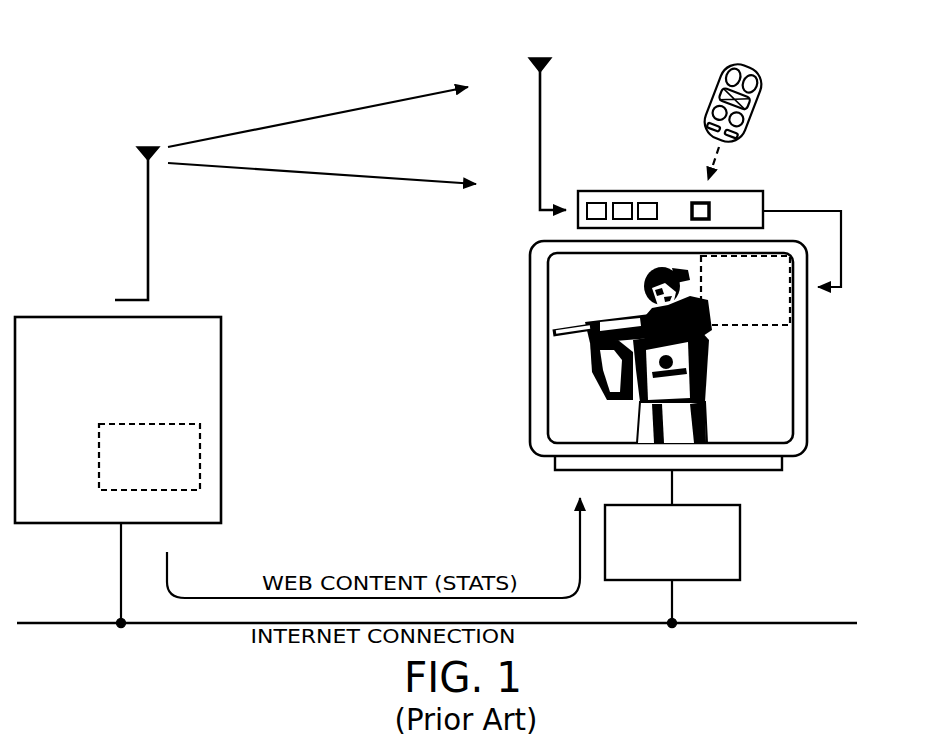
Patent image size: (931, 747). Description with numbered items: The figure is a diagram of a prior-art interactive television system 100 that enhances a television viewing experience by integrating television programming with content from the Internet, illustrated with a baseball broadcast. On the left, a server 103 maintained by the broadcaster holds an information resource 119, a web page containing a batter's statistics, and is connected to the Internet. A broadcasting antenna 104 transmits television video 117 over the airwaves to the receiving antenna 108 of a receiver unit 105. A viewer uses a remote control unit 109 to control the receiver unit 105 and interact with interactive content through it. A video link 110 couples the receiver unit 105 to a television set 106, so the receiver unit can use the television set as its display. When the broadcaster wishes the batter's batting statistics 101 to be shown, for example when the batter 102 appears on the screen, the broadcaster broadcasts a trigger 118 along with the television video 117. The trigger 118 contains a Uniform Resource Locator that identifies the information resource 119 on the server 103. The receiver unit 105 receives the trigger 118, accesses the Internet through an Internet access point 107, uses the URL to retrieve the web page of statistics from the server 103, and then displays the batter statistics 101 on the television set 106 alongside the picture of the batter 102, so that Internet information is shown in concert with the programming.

The interactive television system 100 is at (792, 52).
The batter's batting statistics 101 is at (770, 343).
The batter 102 is at (560, 367).
The server 103 is at (100, 406).
The broadcasting antenna 104 is at (144, 190).
The receiver unit 105 is at (756, 221).
The television set 106 is at (530, 278).
The Internet access point 107 is at (741, 530).
The receiving antenna 108 is at (541, 122).
The remote control unit 109 is at (746, 122).
The video link 110 is at (842, 224).
The television video 117 is at (258, 130).
The trigger 118 is at (258, 174).
The information resource 119 is at (200, 458).